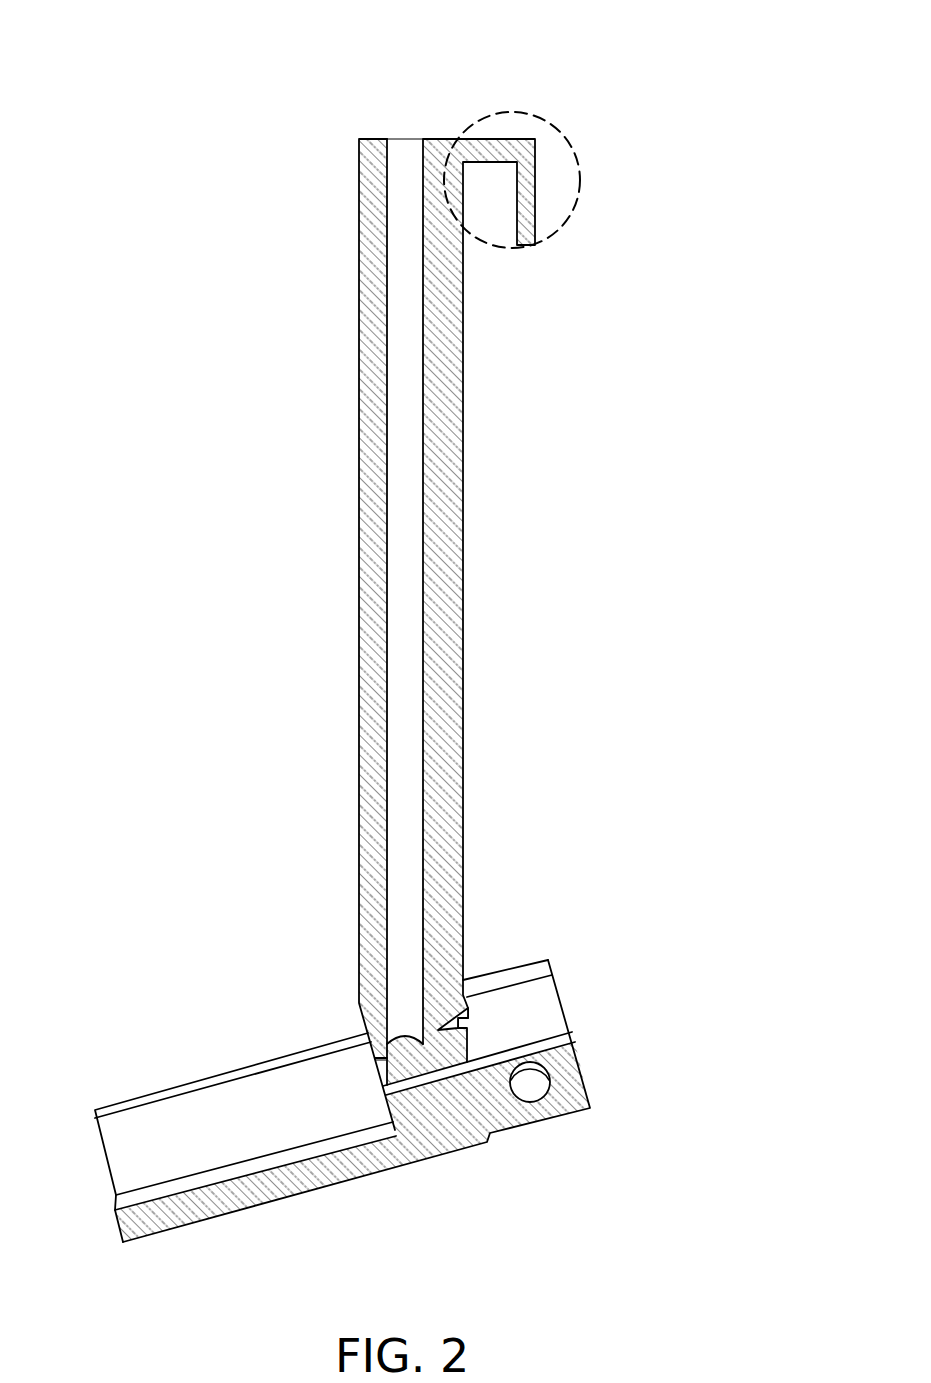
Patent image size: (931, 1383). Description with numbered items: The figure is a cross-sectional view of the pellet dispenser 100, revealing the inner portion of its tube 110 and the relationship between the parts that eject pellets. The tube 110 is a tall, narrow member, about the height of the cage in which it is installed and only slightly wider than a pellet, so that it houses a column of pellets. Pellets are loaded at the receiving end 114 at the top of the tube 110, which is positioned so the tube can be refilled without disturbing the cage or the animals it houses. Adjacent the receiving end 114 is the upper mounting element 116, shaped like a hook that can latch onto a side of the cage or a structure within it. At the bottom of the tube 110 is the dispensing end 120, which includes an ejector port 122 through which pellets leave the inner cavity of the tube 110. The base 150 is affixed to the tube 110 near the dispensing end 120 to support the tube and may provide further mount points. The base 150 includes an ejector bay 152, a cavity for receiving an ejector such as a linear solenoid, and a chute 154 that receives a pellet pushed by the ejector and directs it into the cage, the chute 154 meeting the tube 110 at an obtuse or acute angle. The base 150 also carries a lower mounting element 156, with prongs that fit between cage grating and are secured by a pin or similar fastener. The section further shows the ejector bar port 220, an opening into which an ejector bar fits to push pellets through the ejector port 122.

The pellet dispenser 100 is at (754, 103).
The tube 110 is at (466, 473).
The receiving end 114 is at (401, 127).
The upper mounting element 116 is at (557, 121).
The dispensing end 120 is at (446, 985).
The ejector port 122 is at (428, 1068).
The base 150 is at (128, 1085).
The ejector bay 152 is at (224, 1155).
The chute 154 is at (567, 1058).
The lower mounting element 156 is at (538, 959).
The ejector bar port 220 is at (373, 1090).